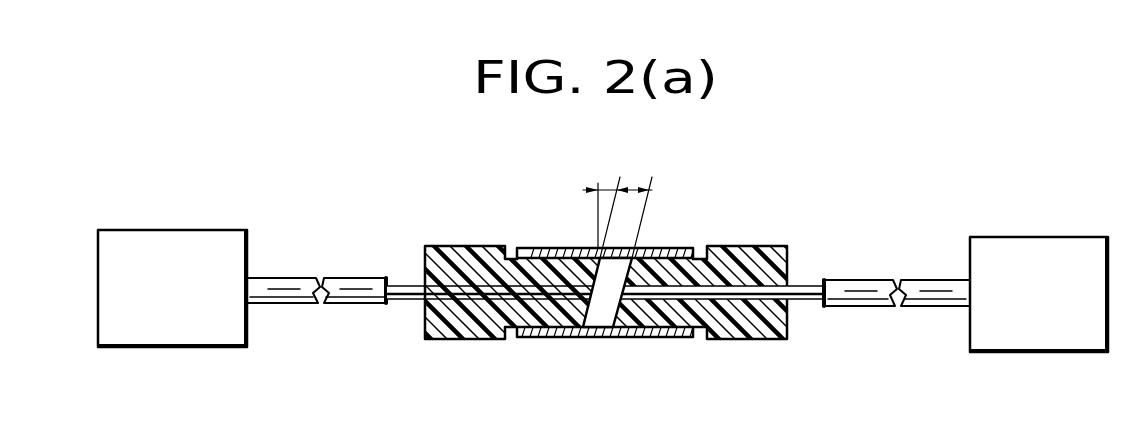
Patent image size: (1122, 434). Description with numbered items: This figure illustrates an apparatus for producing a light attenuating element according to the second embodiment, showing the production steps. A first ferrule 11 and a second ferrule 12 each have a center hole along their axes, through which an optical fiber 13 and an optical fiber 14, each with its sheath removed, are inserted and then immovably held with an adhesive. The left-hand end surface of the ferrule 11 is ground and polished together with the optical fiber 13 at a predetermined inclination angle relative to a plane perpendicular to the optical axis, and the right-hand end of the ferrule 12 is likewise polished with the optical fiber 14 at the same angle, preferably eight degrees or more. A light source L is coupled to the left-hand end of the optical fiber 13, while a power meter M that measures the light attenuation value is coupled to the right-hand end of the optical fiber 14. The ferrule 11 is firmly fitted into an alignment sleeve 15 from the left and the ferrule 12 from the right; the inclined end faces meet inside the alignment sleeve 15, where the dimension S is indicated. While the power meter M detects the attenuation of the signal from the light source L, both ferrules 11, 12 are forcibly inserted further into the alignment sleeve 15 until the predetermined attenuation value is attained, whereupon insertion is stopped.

The light source L is at (203, 237).
The power meter M is at (1025, 250).
The first ferrule 11 is at (462, 252).
The second ferrule 12 is at (752, 255).
The optical fiber 13 is at (403, 293).
The optical fiber 14 is at (807, 300).
The alignment sleeve 15 is at (600, 336).
The offset distance S is at (639, 175).